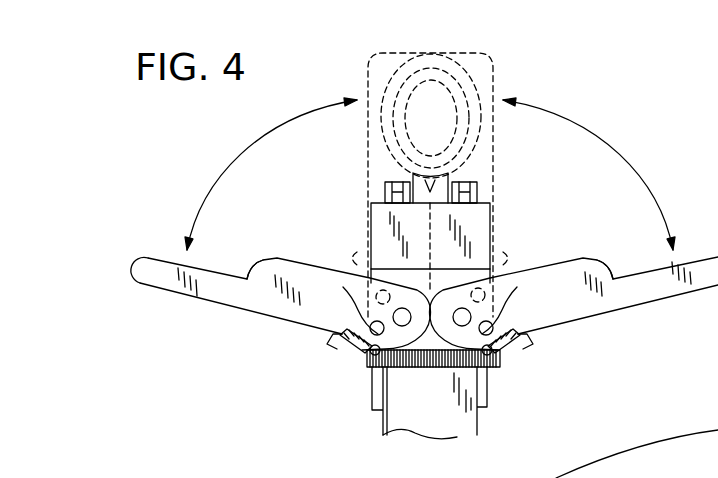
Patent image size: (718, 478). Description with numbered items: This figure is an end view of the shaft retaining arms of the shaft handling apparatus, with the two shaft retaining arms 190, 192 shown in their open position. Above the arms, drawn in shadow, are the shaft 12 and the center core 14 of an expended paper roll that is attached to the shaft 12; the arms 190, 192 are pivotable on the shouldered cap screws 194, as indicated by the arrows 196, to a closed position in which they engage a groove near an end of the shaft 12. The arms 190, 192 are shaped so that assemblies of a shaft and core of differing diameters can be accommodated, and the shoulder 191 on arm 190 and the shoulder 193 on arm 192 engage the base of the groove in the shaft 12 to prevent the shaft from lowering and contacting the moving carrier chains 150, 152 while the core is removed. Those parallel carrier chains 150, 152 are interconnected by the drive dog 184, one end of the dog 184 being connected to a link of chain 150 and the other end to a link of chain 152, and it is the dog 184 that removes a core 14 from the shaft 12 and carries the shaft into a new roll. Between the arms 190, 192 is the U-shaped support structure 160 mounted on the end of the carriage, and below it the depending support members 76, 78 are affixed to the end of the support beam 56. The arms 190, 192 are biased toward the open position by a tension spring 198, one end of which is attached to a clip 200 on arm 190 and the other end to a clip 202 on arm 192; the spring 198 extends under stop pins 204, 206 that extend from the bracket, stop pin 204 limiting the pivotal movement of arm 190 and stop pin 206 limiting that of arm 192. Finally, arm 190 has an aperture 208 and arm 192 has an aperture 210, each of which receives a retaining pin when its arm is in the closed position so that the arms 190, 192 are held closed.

The shaft 12 is at (493, 92).
The center core 14 is at (432, 50).
The support beam 56 is at (468, 425).
The support member 76 is at (372, 398).
The support member 78 is at (479, 397).
The carrier chain 150 is at (478, 187).
The carrier chain 152 is at (385, 188).
The support structure 160 is at (402, 232).
The drive dog 184 is at (428, 175).
The shaft retaining arm 190 is at (493, 78).
The shoulder 191 is at (603, 267).
The shaft retaining arm 192 is at (367, 80).
The shoulder 193 is at (257, 266).
The shouldered cap screws 194 is at (462, 322).
The arrows 196 is at (258, 142).
The tension spring 198 is at (395, 368).
The clip 200 is at (535, 351).
The clip 202 is at (330, 348).
The stop pin 204 is at (494, 362).
The stop pin 206 is at (368, 351).
The aperture 208 is at (486, 292).
The aperture 210 is at (374, 292).